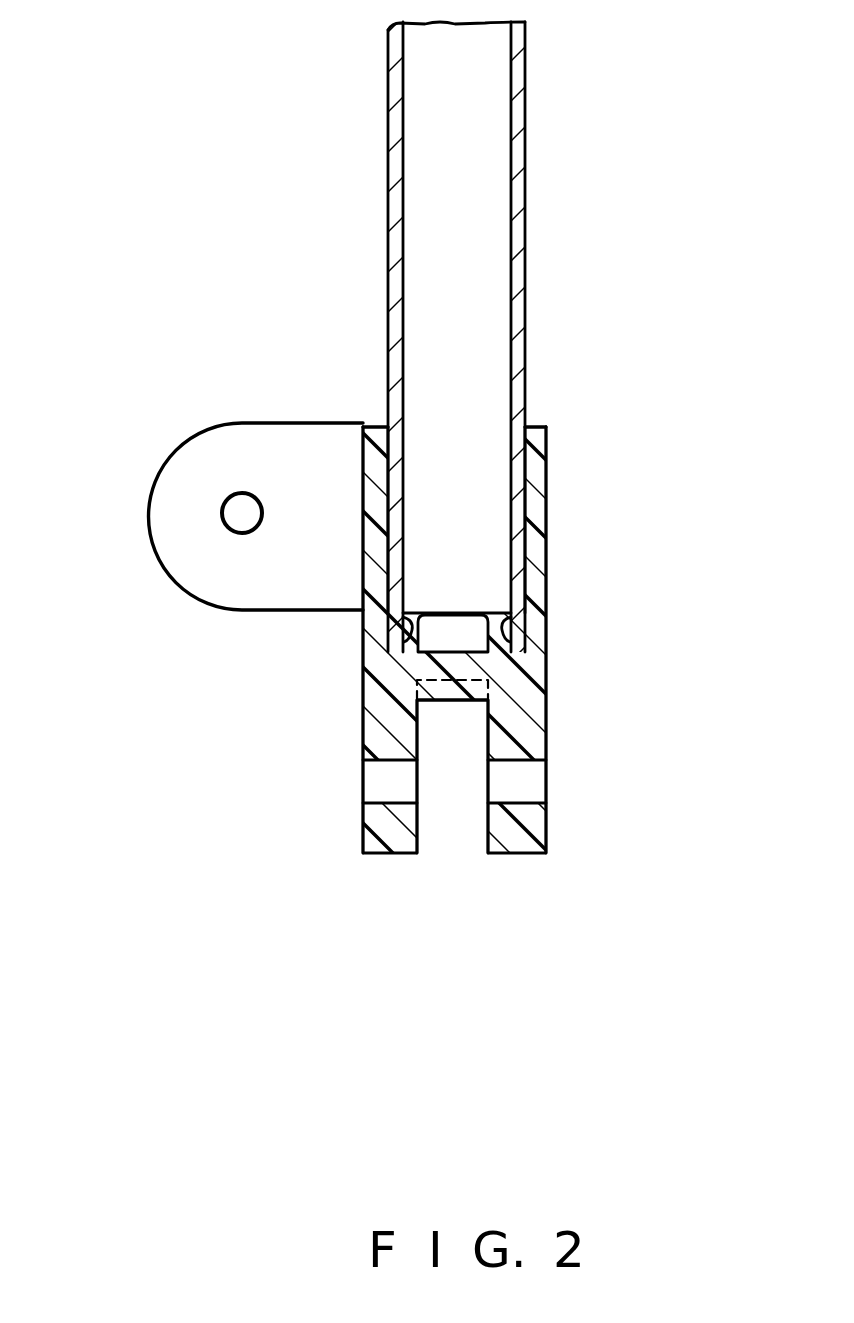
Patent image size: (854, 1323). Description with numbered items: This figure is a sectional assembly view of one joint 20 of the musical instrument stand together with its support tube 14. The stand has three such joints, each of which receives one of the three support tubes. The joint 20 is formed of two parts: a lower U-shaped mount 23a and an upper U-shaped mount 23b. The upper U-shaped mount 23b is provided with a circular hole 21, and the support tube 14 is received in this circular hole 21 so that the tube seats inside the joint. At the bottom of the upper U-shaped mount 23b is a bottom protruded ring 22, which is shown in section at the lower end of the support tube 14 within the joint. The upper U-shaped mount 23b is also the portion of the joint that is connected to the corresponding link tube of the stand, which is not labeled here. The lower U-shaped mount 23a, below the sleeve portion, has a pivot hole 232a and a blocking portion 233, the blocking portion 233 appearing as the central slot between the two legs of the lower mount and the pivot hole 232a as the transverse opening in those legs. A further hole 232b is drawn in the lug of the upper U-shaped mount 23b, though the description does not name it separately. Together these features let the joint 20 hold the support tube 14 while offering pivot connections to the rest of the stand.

The support tube 14 is at (526, 118).
The joint 20 is at (552, 456).
The circular hole 21 is at (527, 428).
The bottom protruded ring 22 is at (500, 623).
The lower U-shaped mount 23a is at (552, 832).
The upper U-shaped mount 23b is at (238, 412).
The pivot hole 232a is at (380, 783).
The hole 232b is at (230, 512).
The blocking portion 233 is at (442, 693).